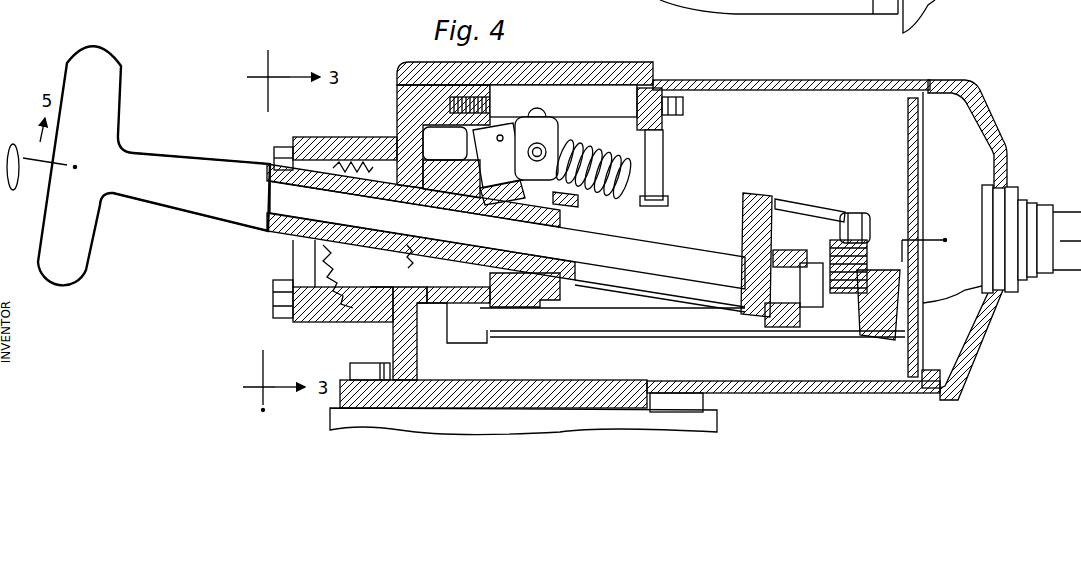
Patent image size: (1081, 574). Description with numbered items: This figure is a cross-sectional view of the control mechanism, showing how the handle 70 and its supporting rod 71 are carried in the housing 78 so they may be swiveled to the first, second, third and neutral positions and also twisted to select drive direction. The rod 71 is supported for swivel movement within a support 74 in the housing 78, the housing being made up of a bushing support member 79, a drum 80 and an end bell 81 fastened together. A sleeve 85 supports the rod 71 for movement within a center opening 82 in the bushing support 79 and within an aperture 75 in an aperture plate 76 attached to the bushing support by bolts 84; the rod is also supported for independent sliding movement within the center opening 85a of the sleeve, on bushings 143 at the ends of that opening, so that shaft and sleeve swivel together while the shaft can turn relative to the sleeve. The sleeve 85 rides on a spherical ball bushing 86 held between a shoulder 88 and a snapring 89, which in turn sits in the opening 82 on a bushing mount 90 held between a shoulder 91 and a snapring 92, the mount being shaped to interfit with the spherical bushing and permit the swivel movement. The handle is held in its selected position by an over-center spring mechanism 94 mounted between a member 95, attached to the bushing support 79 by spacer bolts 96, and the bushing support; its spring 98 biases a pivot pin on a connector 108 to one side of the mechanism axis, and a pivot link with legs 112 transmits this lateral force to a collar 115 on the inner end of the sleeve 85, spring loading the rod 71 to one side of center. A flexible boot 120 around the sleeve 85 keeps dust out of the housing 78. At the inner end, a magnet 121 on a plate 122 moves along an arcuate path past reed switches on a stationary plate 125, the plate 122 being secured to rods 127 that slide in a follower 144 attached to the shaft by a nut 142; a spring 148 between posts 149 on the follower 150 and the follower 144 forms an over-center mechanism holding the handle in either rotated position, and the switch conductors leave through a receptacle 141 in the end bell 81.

The handle 70 is at (118, 80).
The rod 71 is at (693, 258).
The support 74 is at (397, 348).
The aperture 75 is at (300, 272).
The aperture plate 76 is at (308, 322).
The housing 78 is at (567, 60).
The bushing support member 79 is at (450, 170).
The drum 80 is at (795, 80).
The end bell 81 is at (991, 130).
The center opening 82 is at (502, 183).
The bolts 84 is at (272, 307).
The sleeve 85 is at (283, 238).
The center opening of sleeve 85a is at (493, 228).
The ball bushing 86 is at (430, 268).
The shoulder 88 is at (525, 291).
The snapring 89 is at (417, 258).
The bushing mount 90 is at (472, 306).
The shoulder 91 is at (498, 155).
The snapring 92 is at (428, 290).
The over-center spring mechanism 94 is at (648, 187).
The member 95 is at (663, 147).
The spacer bolts 96 is at (618, 97).
The spring 98 is at (612, 185).
The connector 108 is at (499, 137).
The legs 112 is at (555, 133).
The collar 115 is at (570, 193).
The flexible boot 120 is at (333, 276).
The magnet 121 is at (865, 266).
The plate 122 is at (868, 337).
The stationary plate 125 is at (908, 133).
The rods 127 is at (665, 290).
The receptacle 141 is at (1047, 203).
The nut 142 is at (815, 312).
The bushings 143 is at (276, 186).
The follower 144 is at (785, 322).
The spring 148 is at (869, 228).
The posts 149 is at (838, 217).
The follower 150 is at (742, 255).